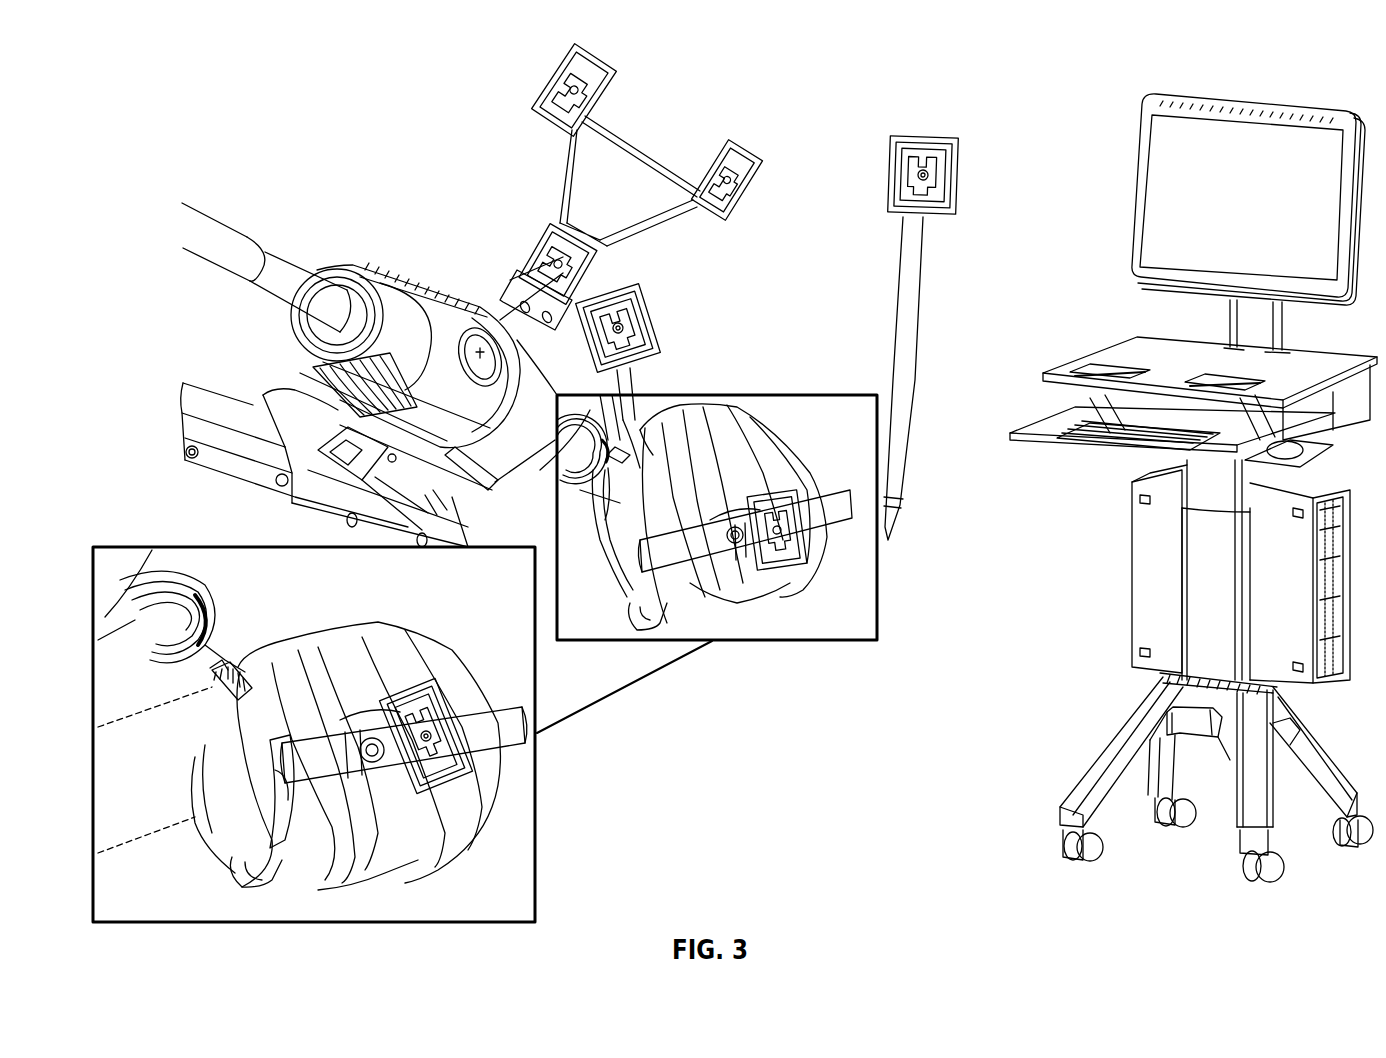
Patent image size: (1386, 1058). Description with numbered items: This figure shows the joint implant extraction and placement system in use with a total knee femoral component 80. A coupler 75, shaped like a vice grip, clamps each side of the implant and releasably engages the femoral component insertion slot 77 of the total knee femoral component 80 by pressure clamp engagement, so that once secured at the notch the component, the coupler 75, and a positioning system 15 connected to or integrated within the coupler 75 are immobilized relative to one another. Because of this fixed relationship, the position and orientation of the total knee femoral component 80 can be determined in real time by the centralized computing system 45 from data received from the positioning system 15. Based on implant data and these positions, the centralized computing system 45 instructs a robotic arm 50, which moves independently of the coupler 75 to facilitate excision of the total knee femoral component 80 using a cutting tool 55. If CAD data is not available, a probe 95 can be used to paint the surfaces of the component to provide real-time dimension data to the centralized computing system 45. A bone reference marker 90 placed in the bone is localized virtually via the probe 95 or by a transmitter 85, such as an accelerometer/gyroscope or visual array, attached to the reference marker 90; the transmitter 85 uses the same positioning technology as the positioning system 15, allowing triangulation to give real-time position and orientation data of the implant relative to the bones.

The positioning system 15 is at (428, 767).
The centralized computing system 45 is at (1148, 550).
The robotic arm 50 is at (187, 460).
The cutting tool 55 is at (228, 672).
The coupler 75 is at (692, 545).
The femoral component insertion slot 77 is at (272, 750).
The total knee femoral component 80 is at (467, 817).
The transmitter 85 is at (643, 323).
The bone reference marker 90 is at (627, 390).
The probe 95 is at (915, 233).